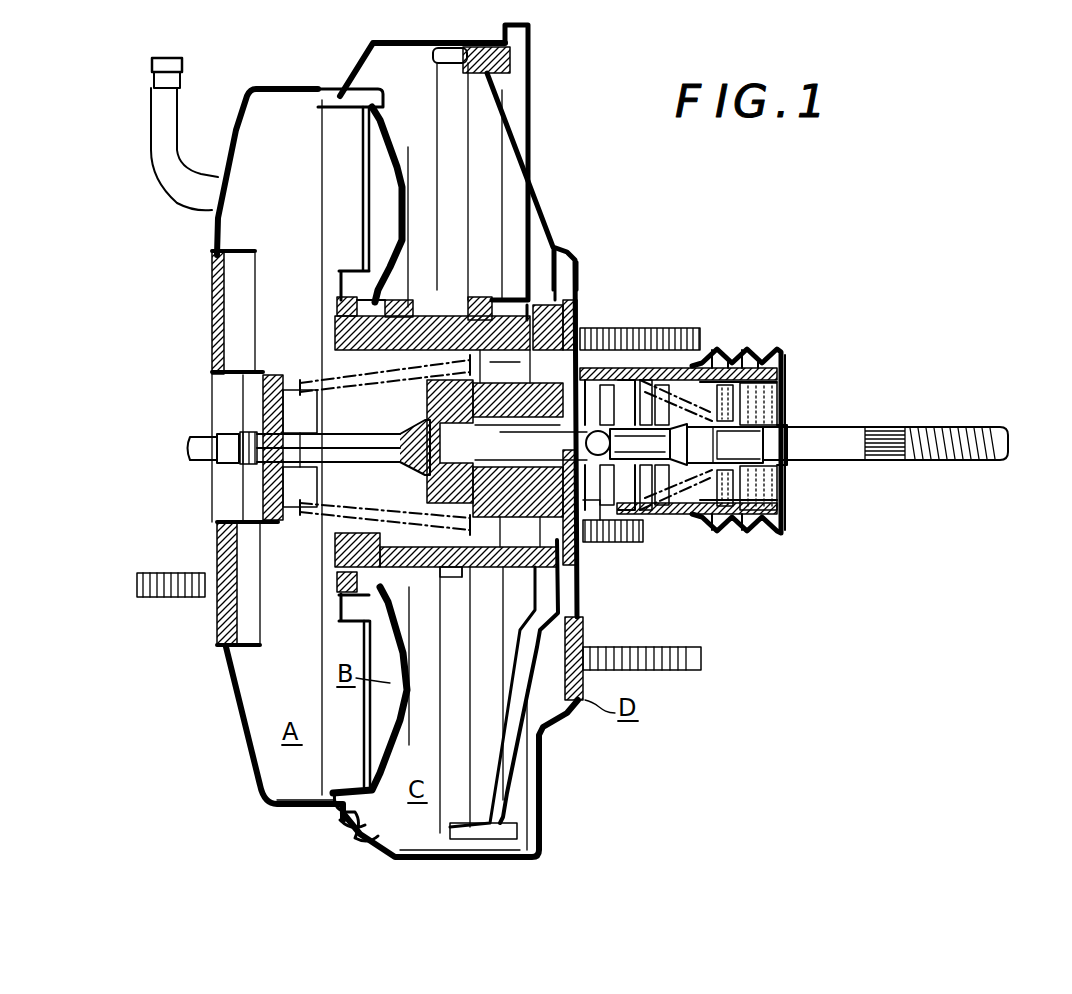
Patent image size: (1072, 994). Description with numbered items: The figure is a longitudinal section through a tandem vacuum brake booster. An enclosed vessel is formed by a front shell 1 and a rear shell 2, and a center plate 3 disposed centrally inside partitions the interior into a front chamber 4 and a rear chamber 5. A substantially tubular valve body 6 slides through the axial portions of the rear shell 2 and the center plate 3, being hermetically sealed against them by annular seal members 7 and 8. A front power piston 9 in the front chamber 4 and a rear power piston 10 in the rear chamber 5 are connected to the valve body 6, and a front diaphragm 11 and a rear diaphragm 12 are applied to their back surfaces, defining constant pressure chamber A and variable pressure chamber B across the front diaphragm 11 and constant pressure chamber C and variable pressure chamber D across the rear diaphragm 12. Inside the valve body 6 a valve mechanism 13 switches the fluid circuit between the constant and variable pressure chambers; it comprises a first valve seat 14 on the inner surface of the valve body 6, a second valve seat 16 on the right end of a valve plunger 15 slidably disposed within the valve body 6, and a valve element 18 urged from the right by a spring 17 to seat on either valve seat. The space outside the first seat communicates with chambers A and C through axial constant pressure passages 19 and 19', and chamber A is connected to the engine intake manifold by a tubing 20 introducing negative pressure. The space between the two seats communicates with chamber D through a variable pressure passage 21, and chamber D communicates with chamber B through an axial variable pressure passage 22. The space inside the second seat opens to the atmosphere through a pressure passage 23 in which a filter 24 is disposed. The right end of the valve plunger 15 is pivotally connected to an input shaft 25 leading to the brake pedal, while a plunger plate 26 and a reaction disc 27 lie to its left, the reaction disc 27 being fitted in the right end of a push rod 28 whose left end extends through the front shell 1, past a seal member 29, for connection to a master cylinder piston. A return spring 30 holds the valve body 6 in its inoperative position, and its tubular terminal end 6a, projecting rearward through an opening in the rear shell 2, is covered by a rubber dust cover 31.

The front shell 1 is at (280, 810).
The rear shell 2 is at (575, 728).
The center plate 3 is at (372, 840).
The front chamber 4 is at (308, 785).
The rear chamber 5 is at (423, 820).
The valve body 6 is at (340, 553).
The tubular terminal end 6a is at (750, 348).
The annular seal member 7 is at (405, 312).
The annular seal member 8 is at (648, 345).
The front power piston 9 is at (378, 745).
The rear power piston 10 is at (523, 690).
The front diaphragm 11 is at (395, 735).
The rear diaphragm 12 is at (548, 765).
The valve mechanism 13 is at (640, 530).
The first valve seat 14 is at (613, 338).
The valve plunger 15 is at (598, 338).
The second valve seat 16 is at (630, 345).
The spring 17 is at (709, 345).
The valve element 18 is at (663, 345).
The constant pressure passage 19 is at (483, 287).
The constant pressure passage 19' is at (579, 240).
The tubing 20 is at (155, 126).
The variable pressure passage 21 is at (605, 525).
The axial variable pressure passage 22 is at (490, 562).
The pressure passage 23 is at (728, 358).
The filter 24 is at (758, 522).
The input shaft 25 is at (965, 460).
The plunger plate 26 is at (430, 473).
The reaction disc 27 is at (445, 402).
The push rod 28 is at (192, 441).
The seal member 29 is at (272, 487).
The return spring 30 is at (292, 378).
The dust cover 31 is at (776, 350).